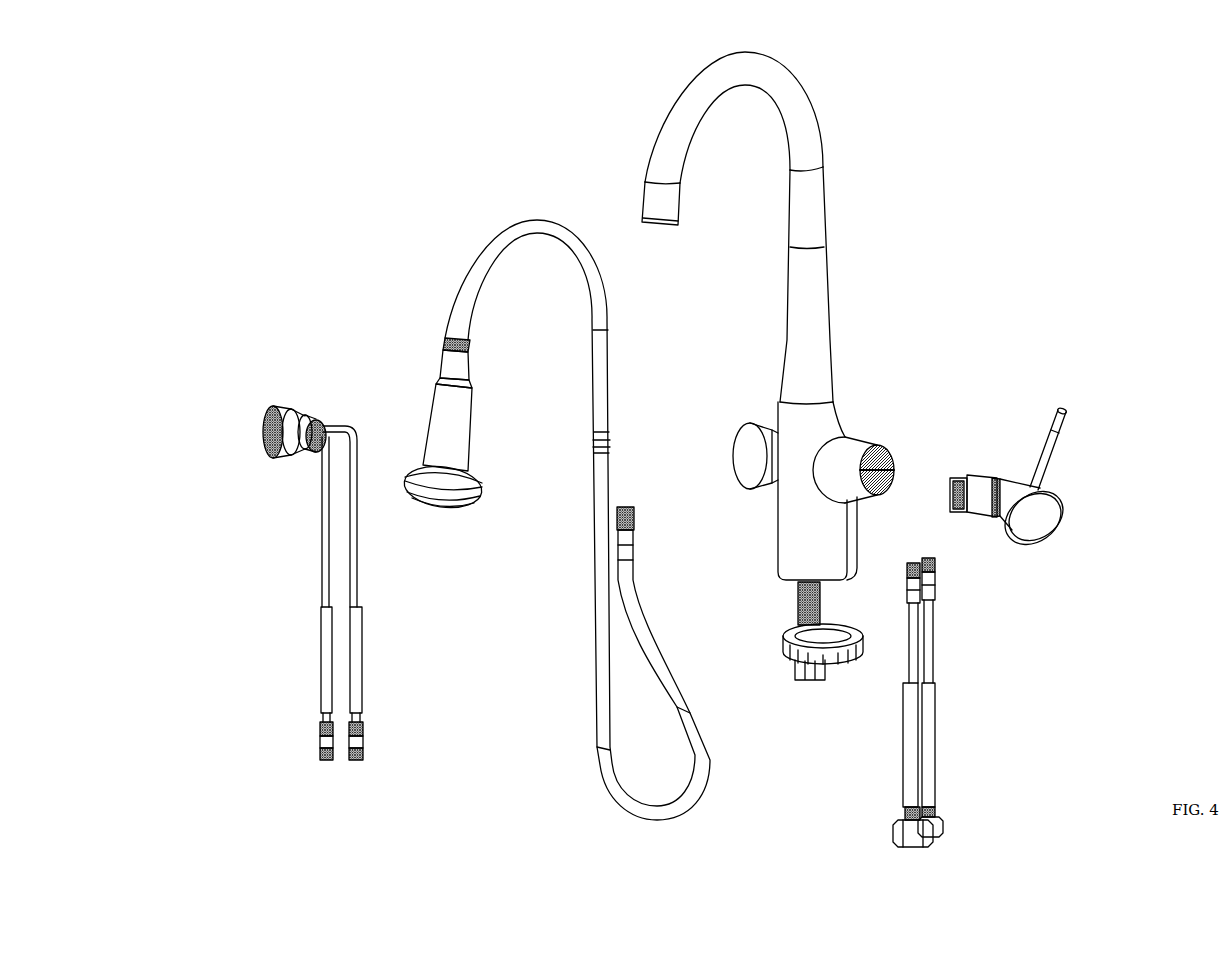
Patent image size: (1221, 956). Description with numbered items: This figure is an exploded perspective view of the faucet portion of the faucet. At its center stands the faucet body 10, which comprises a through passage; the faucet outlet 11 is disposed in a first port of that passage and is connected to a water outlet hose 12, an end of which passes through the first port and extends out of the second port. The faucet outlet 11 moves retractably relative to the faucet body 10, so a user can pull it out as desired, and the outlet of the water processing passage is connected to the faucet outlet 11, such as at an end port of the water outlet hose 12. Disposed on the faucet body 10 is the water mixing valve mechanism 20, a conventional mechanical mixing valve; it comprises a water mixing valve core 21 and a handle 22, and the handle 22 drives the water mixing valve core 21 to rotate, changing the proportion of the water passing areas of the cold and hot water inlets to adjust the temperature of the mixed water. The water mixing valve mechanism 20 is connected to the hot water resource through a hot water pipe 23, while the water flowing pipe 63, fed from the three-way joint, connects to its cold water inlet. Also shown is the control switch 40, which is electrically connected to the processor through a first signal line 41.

The faucet body 10 is at (830, 322).
The faucet outlet 11 is at (452, 422).
The water outlet hose 12 is at (612, 643).
The water mixing valve mechanism 20 is at (1059, 506).
The water mixing valve core 21 is at (980, 483).
The handle 22 is at (1045, 512).
The hot water pipe 23 is at (905, 702).
The control switch 40 is at (267, 430).
The first signal line 41 is at (352, 560).
The water flowing pipe 63 is at (935, 658).